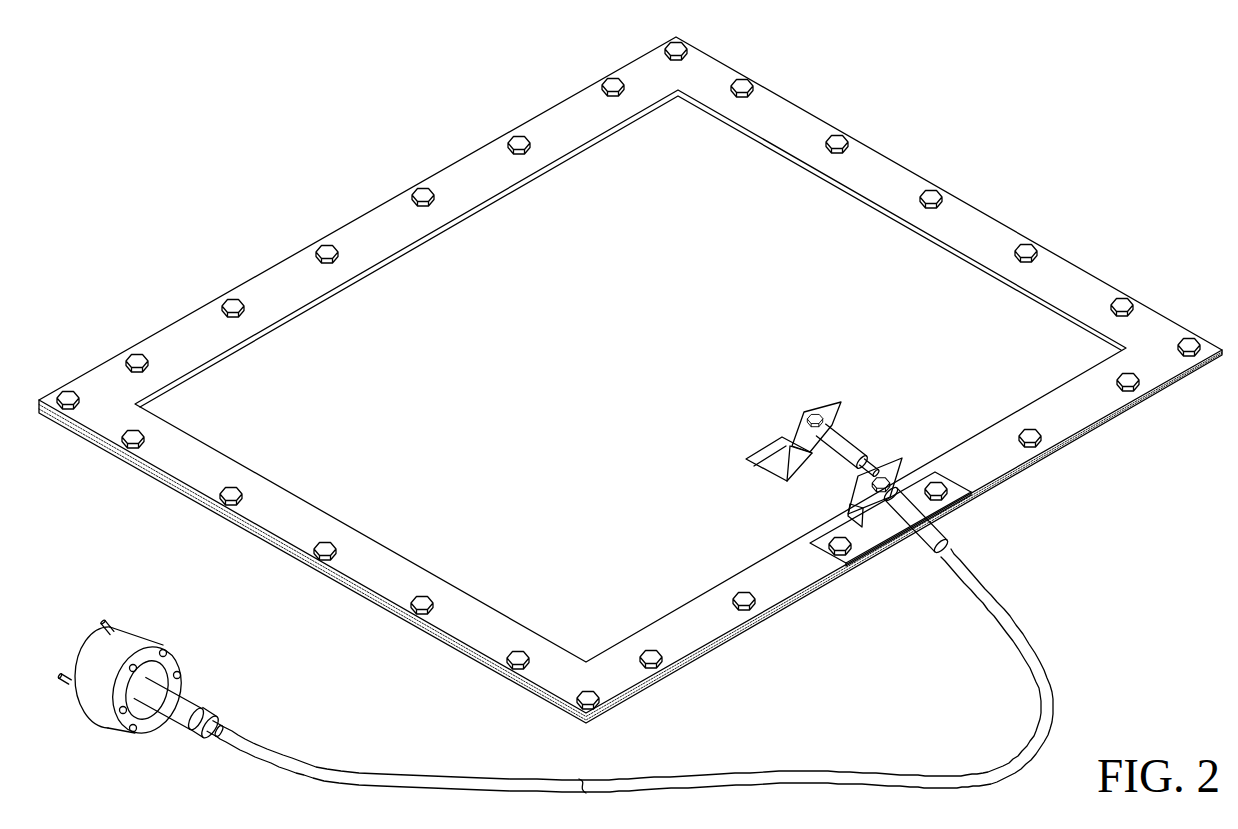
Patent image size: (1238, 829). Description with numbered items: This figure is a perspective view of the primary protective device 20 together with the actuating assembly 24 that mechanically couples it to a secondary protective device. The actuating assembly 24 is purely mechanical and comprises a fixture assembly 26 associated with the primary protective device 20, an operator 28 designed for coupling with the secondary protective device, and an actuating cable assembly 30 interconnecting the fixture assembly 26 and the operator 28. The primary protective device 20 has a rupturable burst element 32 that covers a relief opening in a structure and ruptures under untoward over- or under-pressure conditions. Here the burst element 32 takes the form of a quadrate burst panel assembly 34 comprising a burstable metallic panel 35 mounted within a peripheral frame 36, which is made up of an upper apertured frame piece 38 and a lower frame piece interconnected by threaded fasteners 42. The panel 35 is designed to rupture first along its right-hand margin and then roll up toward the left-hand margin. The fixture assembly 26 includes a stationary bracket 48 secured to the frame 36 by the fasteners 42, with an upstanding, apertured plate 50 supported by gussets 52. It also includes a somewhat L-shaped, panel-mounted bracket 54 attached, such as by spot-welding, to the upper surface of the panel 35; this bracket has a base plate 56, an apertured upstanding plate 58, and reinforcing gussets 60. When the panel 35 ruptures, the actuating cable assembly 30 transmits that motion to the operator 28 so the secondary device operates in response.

The primary protective device 20 is at (1108, 147).
The actuating assembly 24 is at (827, 749).
The fixture assembly 26 is at (946, 448).
The operator 28 is at (222, 673).
The actuating cable assembly 30 is at (419, 767).
The rupturable burst element 32 is at (766, 197).
The burst panel assembly 34 is at (578, 308).
The burstable metallic panel 35 is at (841, 225).
The peripheral frame 36 is at (1052, 280).
The upper frame piece 38 is at (1083, 291).
The threaded fasteners 42 is at (946, 198).
The stationary bracket 48 is at (871, 536).
The upstanding apertured plate 50 is at (902, 465).
The gussets 52 is at (853, 523).
The panel-mounted bracket 54 is at (839, 405).
The base plate 56 is at (755, 452).
The upstanding plate 58 is at (810, 461).
The reinforcing gussets 60 is at (783, 452).